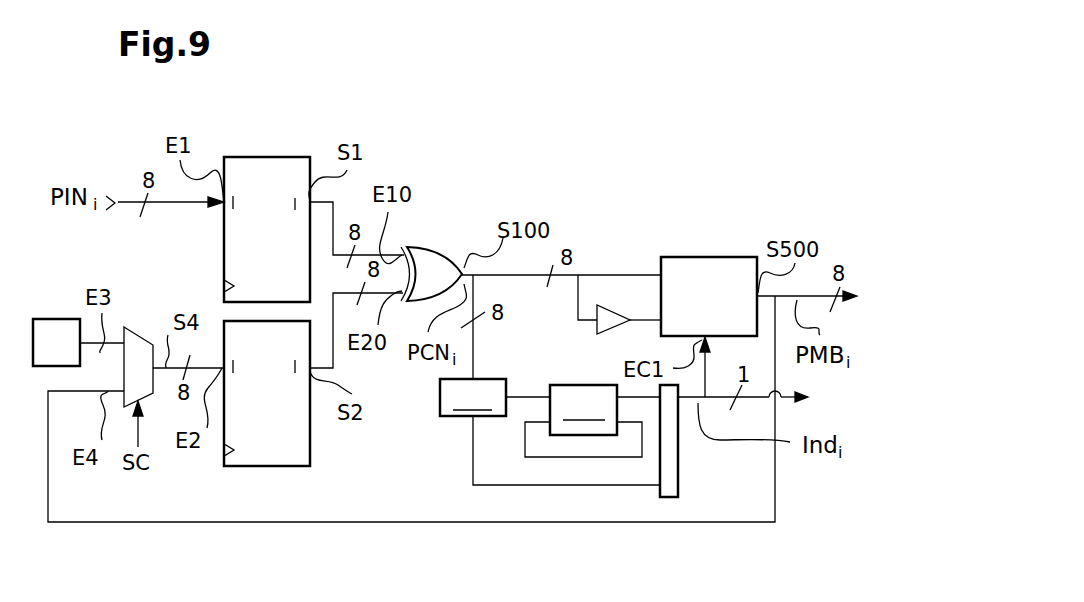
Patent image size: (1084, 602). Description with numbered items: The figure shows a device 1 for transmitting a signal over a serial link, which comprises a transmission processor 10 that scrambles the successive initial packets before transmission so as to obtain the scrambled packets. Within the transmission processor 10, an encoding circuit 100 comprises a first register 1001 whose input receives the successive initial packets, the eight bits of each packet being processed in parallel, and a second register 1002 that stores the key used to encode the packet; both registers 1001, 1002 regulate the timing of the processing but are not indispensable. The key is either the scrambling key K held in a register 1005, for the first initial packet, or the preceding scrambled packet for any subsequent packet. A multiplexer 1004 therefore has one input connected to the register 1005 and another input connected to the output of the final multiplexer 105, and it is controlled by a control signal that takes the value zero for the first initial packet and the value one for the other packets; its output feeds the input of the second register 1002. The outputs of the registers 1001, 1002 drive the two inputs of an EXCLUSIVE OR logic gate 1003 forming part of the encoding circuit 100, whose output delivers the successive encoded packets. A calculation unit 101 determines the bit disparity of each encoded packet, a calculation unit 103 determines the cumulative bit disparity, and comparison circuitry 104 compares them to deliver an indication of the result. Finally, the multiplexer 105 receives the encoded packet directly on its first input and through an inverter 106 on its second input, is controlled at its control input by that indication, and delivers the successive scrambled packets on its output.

The device for transmitting a signal over a serial link 1 is at (679, 53).
The transmission processor 10 is at (534, 115).
The encoding circuit 100 is at (405, 153).
The calculation unit 101 is at (473, 397).
The calculation unit 103 is at (583, 421).
The comparison circuitry 104 is at (679, 457).
The multiplexer 105 is at (713, 248).
The inverter 106 is at (620, 312).
The first register 1001 is at (258, 157).
The second register 1002 is at (248, 467).
The EXCLUSIVE OR logic gate 1003 is at (434, 246).
The multiplexer 1004 is at (150, 343).
The register 1005 is at (35, 319).